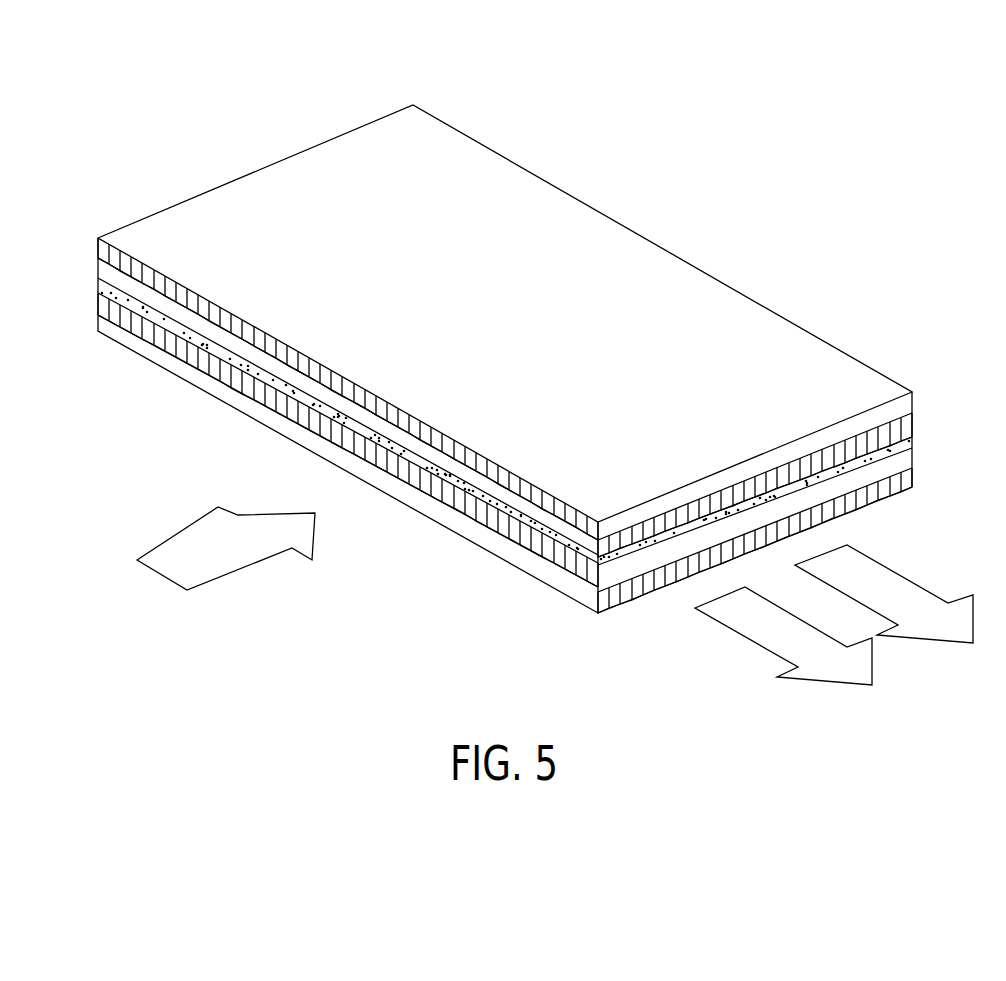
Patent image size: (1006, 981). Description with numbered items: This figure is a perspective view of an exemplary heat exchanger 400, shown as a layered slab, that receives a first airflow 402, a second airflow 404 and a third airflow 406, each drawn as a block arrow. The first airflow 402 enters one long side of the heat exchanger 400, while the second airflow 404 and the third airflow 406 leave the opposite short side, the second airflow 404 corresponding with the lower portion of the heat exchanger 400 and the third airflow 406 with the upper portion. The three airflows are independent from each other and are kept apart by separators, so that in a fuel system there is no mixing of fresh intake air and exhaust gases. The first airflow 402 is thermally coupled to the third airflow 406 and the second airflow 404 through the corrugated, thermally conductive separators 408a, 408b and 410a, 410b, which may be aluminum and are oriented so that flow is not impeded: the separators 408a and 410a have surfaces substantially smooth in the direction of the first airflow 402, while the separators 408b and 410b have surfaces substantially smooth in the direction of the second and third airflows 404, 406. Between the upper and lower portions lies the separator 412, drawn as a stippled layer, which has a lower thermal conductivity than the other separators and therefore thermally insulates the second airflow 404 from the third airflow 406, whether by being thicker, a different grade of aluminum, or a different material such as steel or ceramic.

The heat exchanger 400 is at (208, 88).
The first airflow 402 is at (172, 563).
The second airflow 404 is at (752, 627).
The third airflow 406 is at (892, 592).
The separator 408a is at (103, 250).
The separator 408b is at (903, 422).
The separator 410a is at (103, 298).
The separator 410b is at (903, 490).
The separator 412 is at (908, 442).